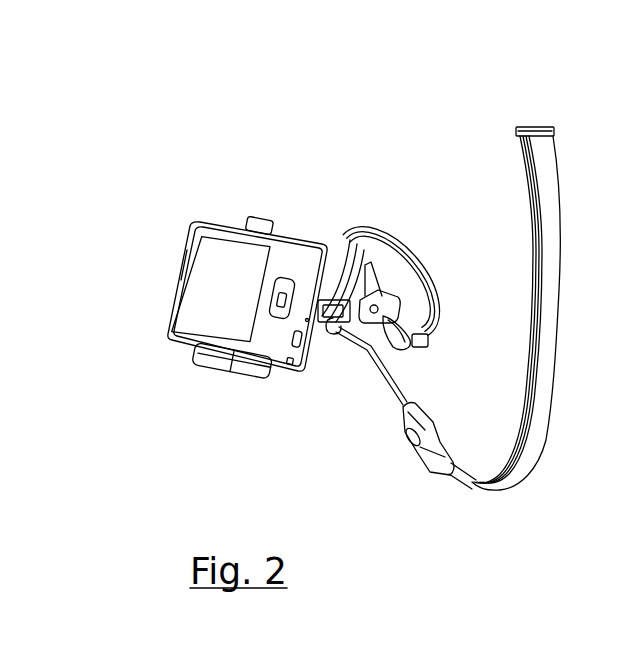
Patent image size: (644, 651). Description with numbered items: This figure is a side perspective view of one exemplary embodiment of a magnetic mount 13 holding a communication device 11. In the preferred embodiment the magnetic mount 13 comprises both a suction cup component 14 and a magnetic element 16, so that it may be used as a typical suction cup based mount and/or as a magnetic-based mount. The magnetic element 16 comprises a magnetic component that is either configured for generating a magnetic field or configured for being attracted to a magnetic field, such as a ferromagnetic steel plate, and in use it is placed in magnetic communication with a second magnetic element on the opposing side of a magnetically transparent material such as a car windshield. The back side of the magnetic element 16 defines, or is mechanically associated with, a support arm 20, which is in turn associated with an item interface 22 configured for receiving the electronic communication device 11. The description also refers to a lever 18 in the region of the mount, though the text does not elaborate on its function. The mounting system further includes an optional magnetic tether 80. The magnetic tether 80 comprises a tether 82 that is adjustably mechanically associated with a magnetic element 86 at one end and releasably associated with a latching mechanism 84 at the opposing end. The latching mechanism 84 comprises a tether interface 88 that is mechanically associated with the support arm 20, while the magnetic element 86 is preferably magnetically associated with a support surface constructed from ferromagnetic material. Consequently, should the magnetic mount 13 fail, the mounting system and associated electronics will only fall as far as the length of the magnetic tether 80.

The magnetic mount 13 is at (158, 118).
The communication device 11 is at (170, 232).
The support arm 20 is at (343, 280).
The suction cup component 14 is at (396, 243).
The magnetic element 16 is at (433, 302).
The lever 18 is at (393, 347).
The item interface 22 is at (195, 357).
The magnetic tether 80 is at (490, 102).
The tether interface 88 is at (335, 357).
The latching mechanism 84 is at (404, 452).
The magnetic element 86 is at (553, 127).
The tether 82 is at (528, 458).